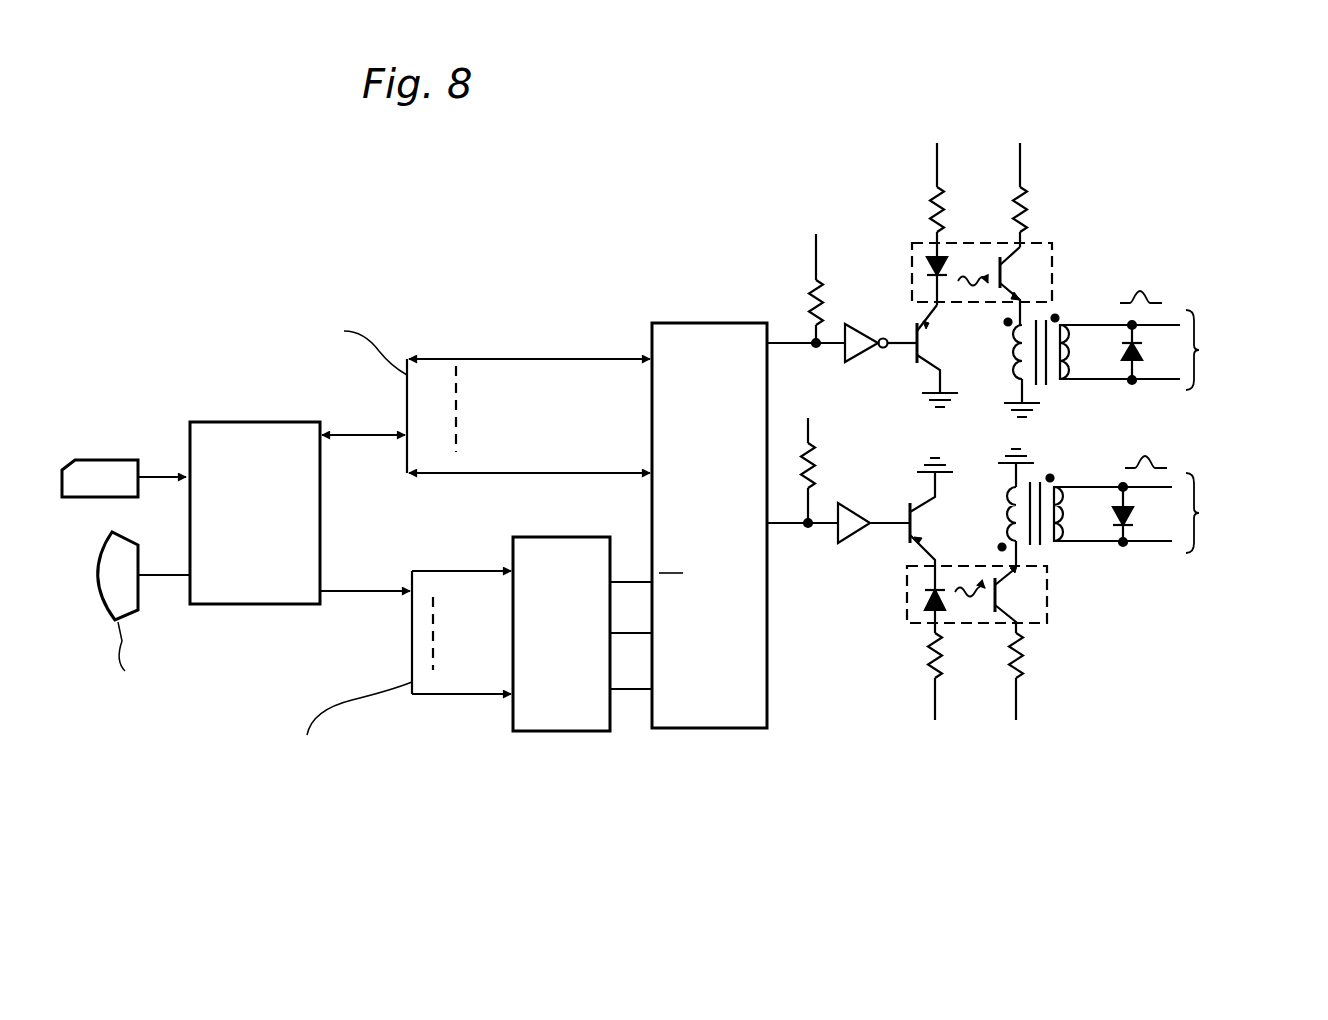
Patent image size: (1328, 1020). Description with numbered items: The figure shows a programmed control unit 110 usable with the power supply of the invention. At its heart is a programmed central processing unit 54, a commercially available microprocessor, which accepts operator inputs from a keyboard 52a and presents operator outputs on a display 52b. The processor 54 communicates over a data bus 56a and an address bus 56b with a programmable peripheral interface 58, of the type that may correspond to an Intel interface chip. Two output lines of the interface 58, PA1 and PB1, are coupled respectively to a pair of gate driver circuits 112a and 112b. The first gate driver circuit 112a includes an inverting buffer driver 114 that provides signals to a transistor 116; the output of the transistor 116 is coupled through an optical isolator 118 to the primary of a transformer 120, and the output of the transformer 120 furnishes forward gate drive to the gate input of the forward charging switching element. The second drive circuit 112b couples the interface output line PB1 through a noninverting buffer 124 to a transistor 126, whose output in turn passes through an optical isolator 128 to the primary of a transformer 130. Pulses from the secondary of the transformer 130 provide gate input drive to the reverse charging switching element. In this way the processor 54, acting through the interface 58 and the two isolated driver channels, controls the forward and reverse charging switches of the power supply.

The keyboard 52a is at (102, 460).
The display 52b is at (127, 602).
The central processing unit 54 is at (248, 596).
The data bus 56a is at (407, 406).
The address bus 56b is at (412, 653).
The programmable peripheral interface 58 is at (688, 331).
The control unit 110 is at (485, 779).
The gate driver circuit 112a is at (986, 267).
The gate driver circuit 112b is at (1027, 571).
The inverting buffer driver 114 is at (860, 328).
The transistor 116 is at (935, 365).
The optical isolator 118 is at (1053, 268).
The transformer 120 is at (1054, 389).
The noninverting buffer 124 is at (849, 500).
The transistor 126 is at (929, 510).
The optical isolator 128 is at (1048, 605).
The transformer 130 is at (1056, 555).